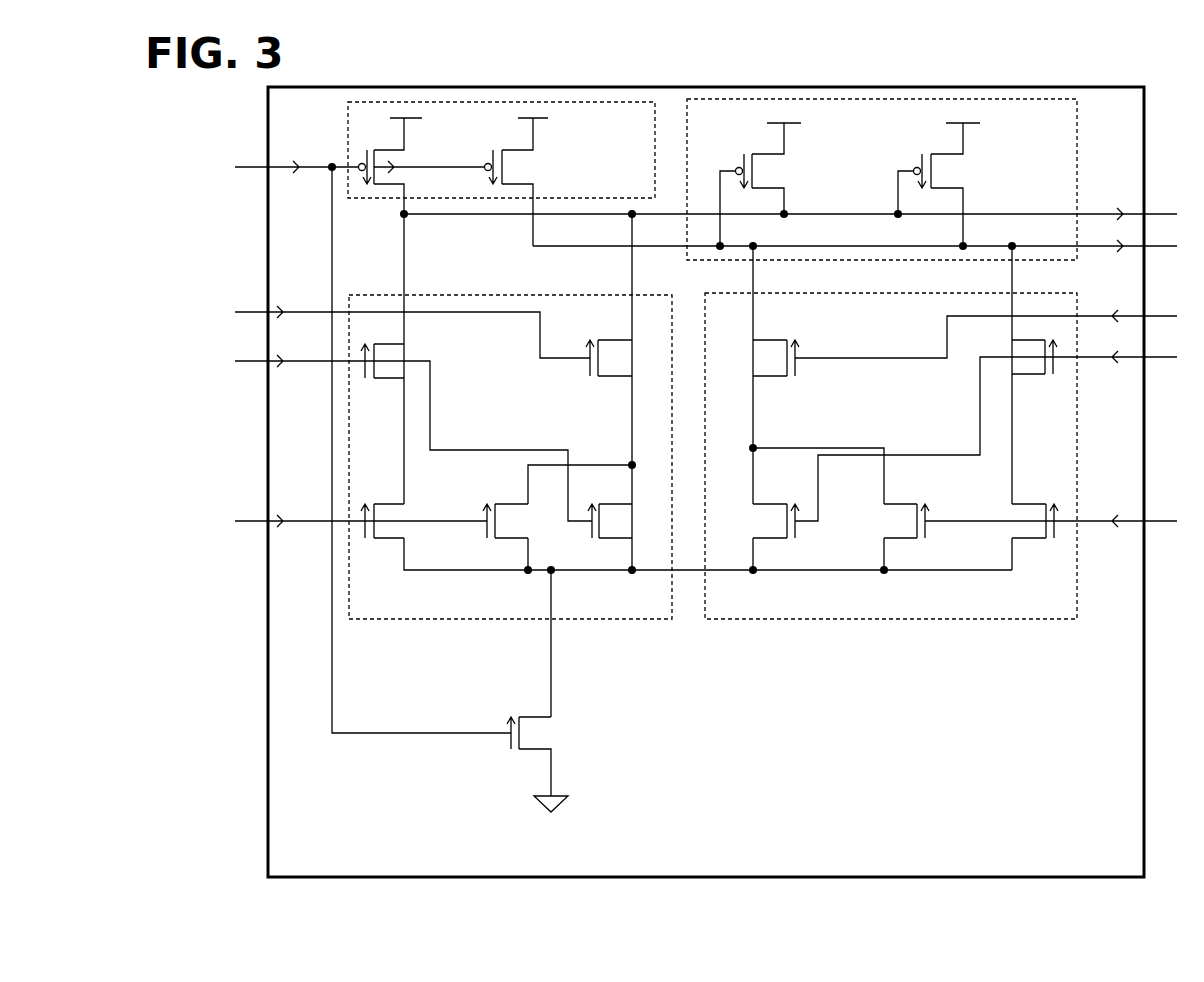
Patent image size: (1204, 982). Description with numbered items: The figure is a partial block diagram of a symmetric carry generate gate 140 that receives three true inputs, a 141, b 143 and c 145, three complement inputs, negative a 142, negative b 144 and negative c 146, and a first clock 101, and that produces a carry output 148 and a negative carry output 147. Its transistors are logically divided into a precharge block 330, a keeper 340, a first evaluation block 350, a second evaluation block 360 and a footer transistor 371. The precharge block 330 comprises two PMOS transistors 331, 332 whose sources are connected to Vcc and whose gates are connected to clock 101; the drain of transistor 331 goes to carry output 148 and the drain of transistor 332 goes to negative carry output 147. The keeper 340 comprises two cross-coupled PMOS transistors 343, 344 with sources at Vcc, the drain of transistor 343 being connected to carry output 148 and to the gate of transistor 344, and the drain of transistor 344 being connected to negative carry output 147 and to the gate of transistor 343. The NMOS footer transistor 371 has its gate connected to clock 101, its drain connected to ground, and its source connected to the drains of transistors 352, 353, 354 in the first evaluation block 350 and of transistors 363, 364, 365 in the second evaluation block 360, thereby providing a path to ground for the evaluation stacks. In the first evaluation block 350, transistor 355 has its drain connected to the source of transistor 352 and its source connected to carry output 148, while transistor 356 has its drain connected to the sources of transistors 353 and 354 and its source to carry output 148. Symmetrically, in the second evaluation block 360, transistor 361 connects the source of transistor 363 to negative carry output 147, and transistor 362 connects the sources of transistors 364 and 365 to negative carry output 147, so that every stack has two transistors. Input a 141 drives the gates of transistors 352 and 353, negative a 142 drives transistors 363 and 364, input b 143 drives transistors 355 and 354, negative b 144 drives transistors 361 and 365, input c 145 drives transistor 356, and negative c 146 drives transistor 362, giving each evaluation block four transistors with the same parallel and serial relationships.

The first clock 101 is at (360, 139).
The symmetric carry generate gate 140 is at (706, 482).
The input a 141 is at (361, 513).
The input negative a 142 is at (1160, 496).
The input b 143 is at (300, 371).
The input negative b 144 is at (1159, 363).
The input c 145 is at (412, 323).
The input negative c 146 is at (1159, 299).
The negative carry output 147 is at (1133, 252).
The carry output 148 is at (790, 195).
The precharge block 330 is at (557, 102).
The PMOS transistor 331 is at (402, 166).
The PMOS transistor 332 is at (533, 182).
The keeper 340 is at (823, 99).
The PMOS transistor 343 is at (773, 184).
The PMOS transistor 344 is at (947, 184).
The first evaluation block 350 is at (380, 619).
The transistor 352 is at (382, 503).
The transistor 353 is at (518, 521).
The transistor 354 is at (627, 521).
The transistor 355 is at (401, 351).
The transistor 356 is at (621, 358).
The second evaluation block 360 is at (1013, 619).
The transistor 361 is at (1041, 382).
The transistor 362 is at (766, 359).
The transistor 363 is at (1042, 545).
The transistor 364 is at (893, 519).
The transistor 365 is at (763, 519).
The footer transistor 371 is at (554, 763).